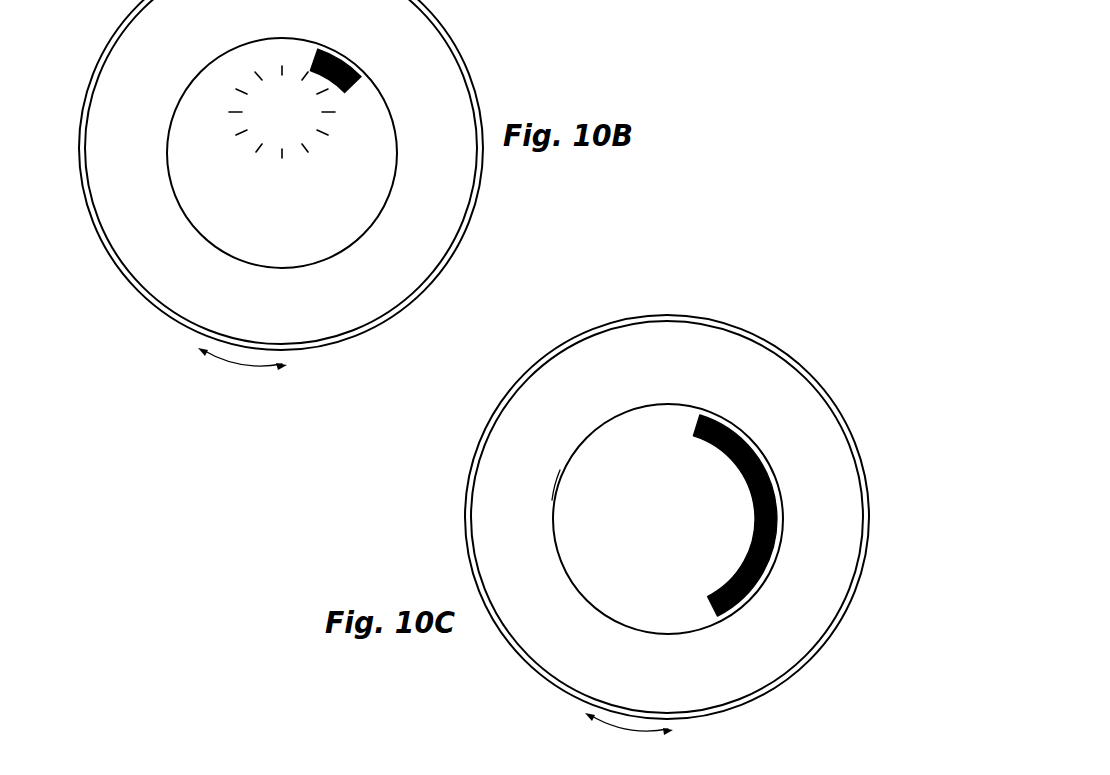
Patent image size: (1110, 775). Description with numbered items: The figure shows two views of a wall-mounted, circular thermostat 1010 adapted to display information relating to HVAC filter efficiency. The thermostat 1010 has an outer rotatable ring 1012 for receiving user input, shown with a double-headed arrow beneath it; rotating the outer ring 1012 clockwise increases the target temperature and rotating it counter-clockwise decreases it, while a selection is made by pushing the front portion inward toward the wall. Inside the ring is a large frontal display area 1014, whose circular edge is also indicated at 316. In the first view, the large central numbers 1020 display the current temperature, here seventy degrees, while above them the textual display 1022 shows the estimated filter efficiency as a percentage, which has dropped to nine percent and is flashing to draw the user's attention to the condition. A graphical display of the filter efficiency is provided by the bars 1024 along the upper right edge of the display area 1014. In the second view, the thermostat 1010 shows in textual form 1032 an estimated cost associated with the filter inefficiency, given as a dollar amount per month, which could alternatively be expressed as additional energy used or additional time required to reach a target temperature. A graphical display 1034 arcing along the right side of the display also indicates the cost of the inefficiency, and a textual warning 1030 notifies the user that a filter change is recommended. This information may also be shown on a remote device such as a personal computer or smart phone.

In FIG. 10B, the thermostat 1010 is at (494, 228).
In FIG. 10C, the thermostat 1010 is at (427, 469).
In FIG. 10B, the outer rotatable ring 1012 is at (177, 317).
In FIG. 10C, the outer rotatable ring 1012 is at (562, 683).
In FIG. 10B, the frontal display area 1014 is at (233, 245).
In FIG. 10C, the frontal display area 1014 is at (652, 623).
In FIG. 10C, the display bezel edge 316 is at (570, 513).
In FIG. 10B, the large central numbers 1020 is at (226, 193).
In FIG. 10B, the textual display 1022 is at (240, 81).
In FIG. 10B, the bars 1024 is at (360, 93).
In FIG. 10C, the textual warning 1030 is at (636, 441).
In FIG. 10C, the textual form 1032 is at (600, 557).
In FIG. 10C, the graphical display 1034 is at (692, 412).